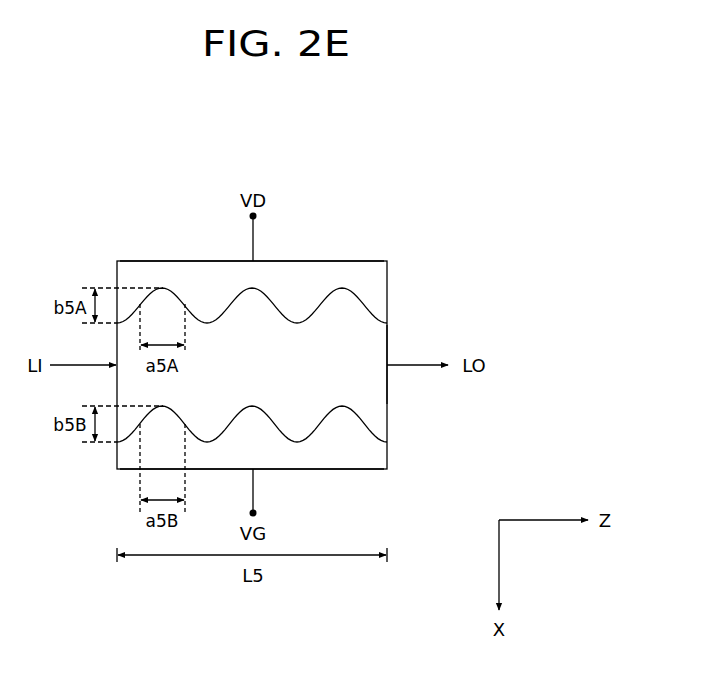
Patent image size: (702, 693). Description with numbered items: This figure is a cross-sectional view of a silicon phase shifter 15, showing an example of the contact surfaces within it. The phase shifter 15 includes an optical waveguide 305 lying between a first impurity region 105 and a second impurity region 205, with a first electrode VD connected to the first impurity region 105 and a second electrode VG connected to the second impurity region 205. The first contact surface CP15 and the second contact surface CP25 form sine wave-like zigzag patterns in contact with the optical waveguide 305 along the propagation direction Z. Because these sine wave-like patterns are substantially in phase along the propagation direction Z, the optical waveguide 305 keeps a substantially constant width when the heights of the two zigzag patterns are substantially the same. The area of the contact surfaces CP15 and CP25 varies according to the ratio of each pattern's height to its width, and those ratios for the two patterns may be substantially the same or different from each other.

The silicon phase shifter 15 is at (240, 133).
The first impurity region 105 is at (322, 266).
The first contact surface CP15 is at (350, 305).
The optical waveguide 305 is at (388, 340).
The second contact surface CP25 is at (367, 407).
The second impurity region 205 is at (378, 457).